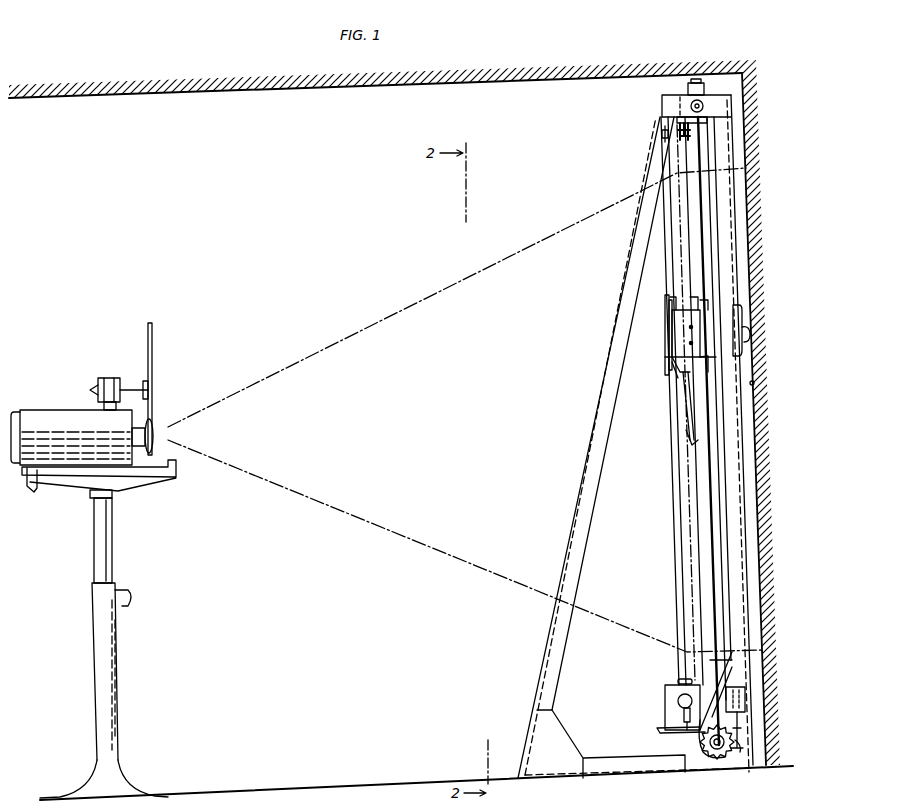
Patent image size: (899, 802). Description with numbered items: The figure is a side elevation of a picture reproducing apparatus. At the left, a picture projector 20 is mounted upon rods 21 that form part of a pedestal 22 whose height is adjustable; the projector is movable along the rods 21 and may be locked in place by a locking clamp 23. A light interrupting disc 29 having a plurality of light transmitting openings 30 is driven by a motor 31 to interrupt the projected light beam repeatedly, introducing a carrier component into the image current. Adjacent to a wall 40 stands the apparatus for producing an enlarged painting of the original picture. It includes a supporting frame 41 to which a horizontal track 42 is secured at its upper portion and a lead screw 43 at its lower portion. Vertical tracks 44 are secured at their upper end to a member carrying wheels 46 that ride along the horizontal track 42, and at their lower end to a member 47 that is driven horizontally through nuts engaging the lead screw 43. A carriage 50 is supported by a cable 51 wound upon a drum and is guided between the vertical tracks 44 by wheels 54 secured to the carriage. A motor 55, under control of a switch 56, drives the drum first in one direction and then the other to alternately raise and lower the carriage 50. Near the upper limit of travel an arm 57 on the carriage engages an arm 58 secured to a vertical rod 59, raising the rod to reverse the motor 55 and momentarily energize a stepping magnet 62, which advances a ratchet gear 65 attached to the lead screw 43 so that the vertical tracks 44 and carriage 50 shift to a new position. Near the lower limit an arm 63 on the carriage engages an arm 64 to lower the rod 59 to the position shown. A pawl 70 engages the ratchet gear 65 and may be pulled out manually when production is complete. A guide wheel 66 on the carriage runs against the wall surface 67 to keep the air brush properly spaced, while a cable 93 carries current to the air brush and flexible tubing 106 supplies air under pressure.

The picture projector 20 is at (38, 410).
The rods 21 is at (157, 470).
The pedestal 22 is at (122, 657).
The locking clamp 23 is at (31, 490).
The light interrupting disc 29 is at (152, 331).
The light transmitting openings 30 is at (153, 437).
The motor 31 is at (114, 378).
The wall 40 is at (743, 108).
The supporting frame 41 is at (650, 170).
The horizontal track 42 is at (690, 108).
The lead screw 43 is at (712, 758).
The vertical tracks 44 is at (705, 490).
The wheels 46 is at (690, 86).
The member 47 is at (690, 730).
The carriage 50 is at (715, 317).
The cable 51 is at (683, 265).
The wheels 54 is at (703, 356).
The motor 55 is at (668, 702).
The switch 56 is at (672, 723).
The arm 57 is at (665, 308).
The arm 58 is at (660, 148).
The vertical rod 59 is at (672, 402).
The stepping magnet 62 is at (748, 700).
The arm 63 is at (670, 368).
The arm 64 is at (680, 680).
The ratchet gear 65 is at (720, 760).
The guide wheel 66 is at (748, 345).
The wall surface 67 is at (755, 385).
The pawl 70 is at (697, 738).
The cable 93 is at (690, 441).
The flexible tubing 106 is at (683, 428).